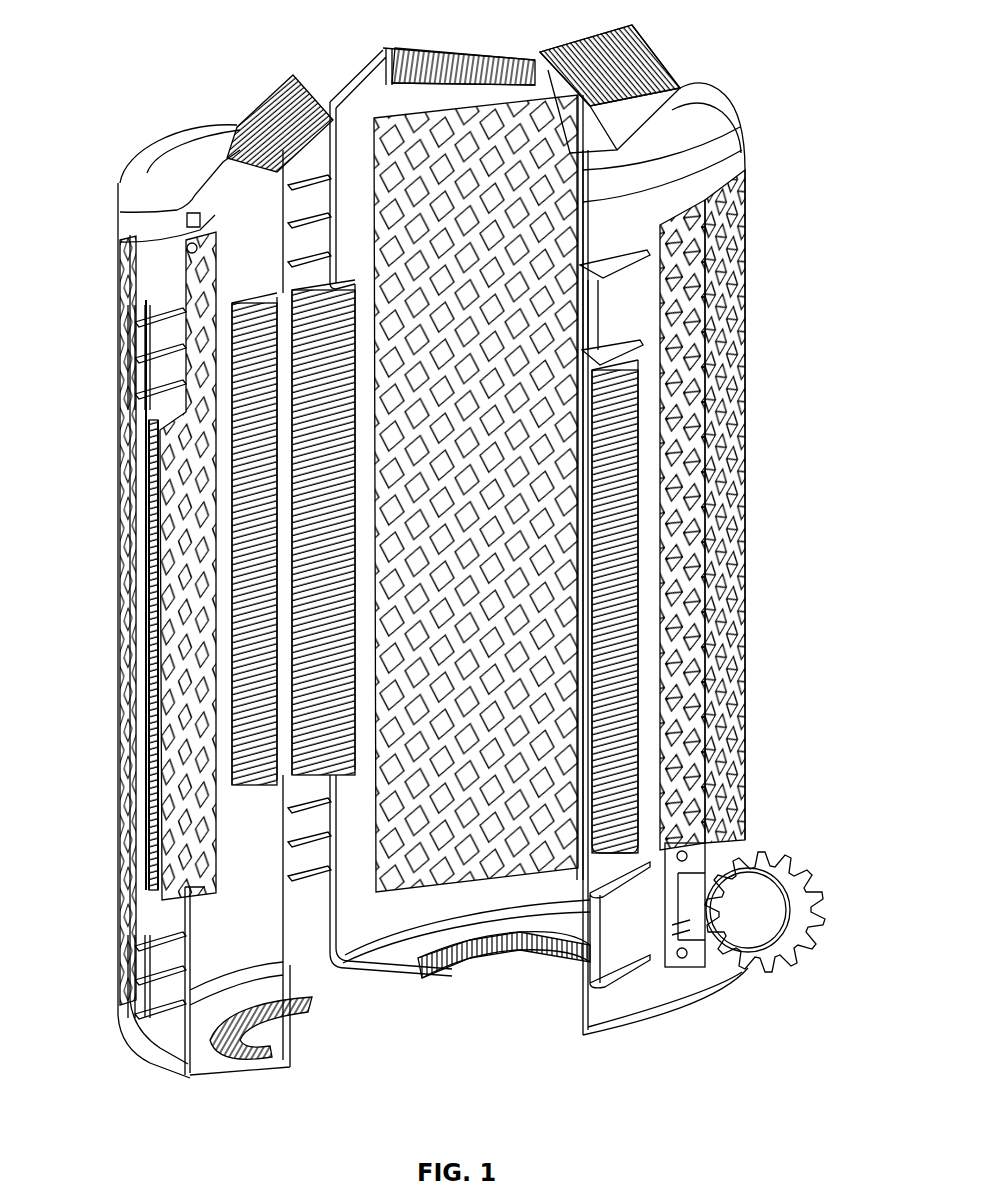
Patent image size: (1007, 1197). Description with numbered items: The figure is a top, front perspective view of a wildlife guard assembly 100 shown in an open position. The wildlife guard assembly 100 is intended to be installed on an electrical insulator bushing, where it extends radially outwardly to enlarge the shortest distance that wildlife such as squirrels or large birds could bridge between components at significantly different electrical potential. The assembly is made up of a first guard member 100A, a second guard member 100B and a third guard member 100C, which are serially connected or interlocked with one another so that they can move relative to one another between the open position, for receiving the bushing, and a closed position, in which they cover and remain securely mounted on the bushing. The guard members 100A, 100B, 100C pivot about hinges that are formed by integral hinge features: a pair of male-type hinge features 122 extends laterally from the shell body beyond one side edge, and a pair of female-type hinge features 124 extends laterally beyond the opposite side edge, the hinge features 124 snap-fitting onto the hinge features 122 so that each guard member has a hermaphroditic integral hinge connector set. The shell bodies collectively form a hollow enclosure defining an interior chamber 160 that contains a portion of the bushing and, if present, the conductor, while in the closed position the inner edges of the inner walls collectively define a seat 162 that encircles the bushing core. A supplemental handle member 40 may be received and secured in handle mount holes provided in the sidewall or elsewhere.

The wildlife guard assembly 100 is at (178, 66).
The first guard member 100A is at (127, 433).
The second guard member 100B is at (376, 967).
The third guard member 100C is at (744, 329).
The hinge features 122 is at (590, 320).
The hinge features 124 is at (135, 355).
The interior chamber 160 is at (373, 881).
The seat 162 is at (516, 962).
The supplemental handle member 40 is at (778, 985).